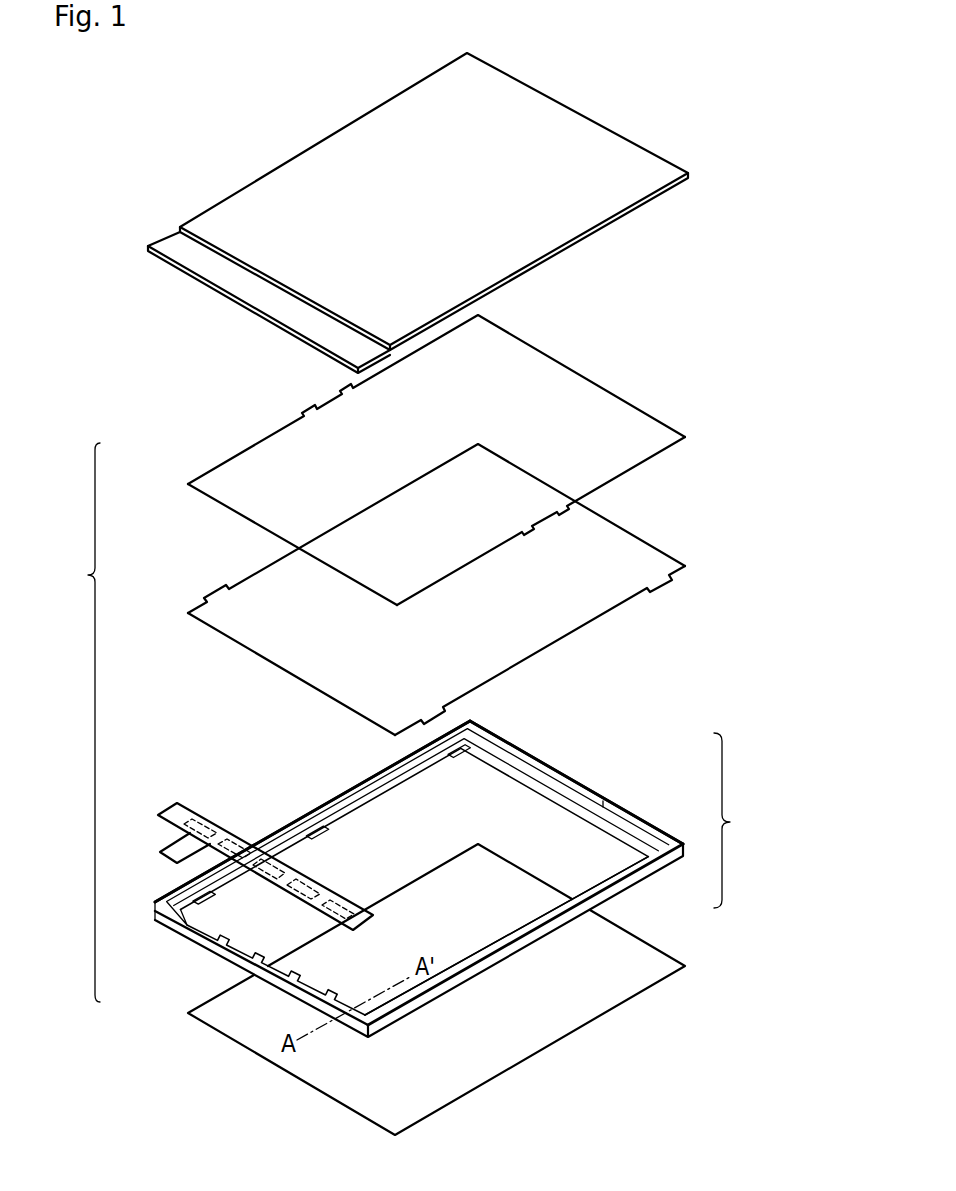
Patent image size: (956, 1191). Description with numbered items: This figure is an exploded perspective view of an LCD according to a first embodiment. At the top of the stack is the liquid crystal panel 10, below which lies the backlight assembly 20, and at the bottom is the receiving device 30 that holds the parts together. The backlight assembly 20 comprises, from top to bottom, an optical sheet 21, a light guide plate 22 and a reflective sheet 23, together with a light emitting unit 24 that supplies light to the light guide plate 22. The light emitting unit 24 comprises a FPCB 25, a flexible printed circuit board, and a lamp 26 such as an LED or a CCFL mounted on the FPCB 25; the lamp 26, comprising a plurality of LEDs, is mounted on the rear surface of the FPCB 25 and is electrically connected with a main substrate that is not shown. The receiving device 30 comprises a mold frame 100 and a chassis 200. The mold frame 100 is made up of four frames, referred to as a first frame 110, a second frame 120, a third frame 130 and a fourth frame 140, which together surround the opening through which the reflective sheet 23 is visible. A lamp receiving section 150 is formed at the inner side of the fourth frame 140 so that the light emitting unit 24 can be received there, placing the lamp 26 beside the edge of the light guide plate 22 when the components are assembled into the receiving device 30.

The liquid crystal panel 10 is at (166, 246).
The backlight assembly 20 is at (88, 575).
The optical sheet 21 is at (203, 483).
The light guide plate 22 is at (202, 612).
The reflective sheet 23 is at (202, 1013).
The light emitting unit 24 is at (248, 740).
The FPCB 25 is at (180, 807).
The lamp 26 is at (240, 830).
The receiving device 30 is at (734, 820).
The mold frame 100 is at (406, 861).
The first frame 110 is at (337, 800).
The second frame 120 is at (520, 743).
The third frame 130 is at (593, 883).
The fourth frame 140 is at (155, 910).
The lamp receiving section 150 is at (244, 950).
The chassis 200 is at (632, 881).